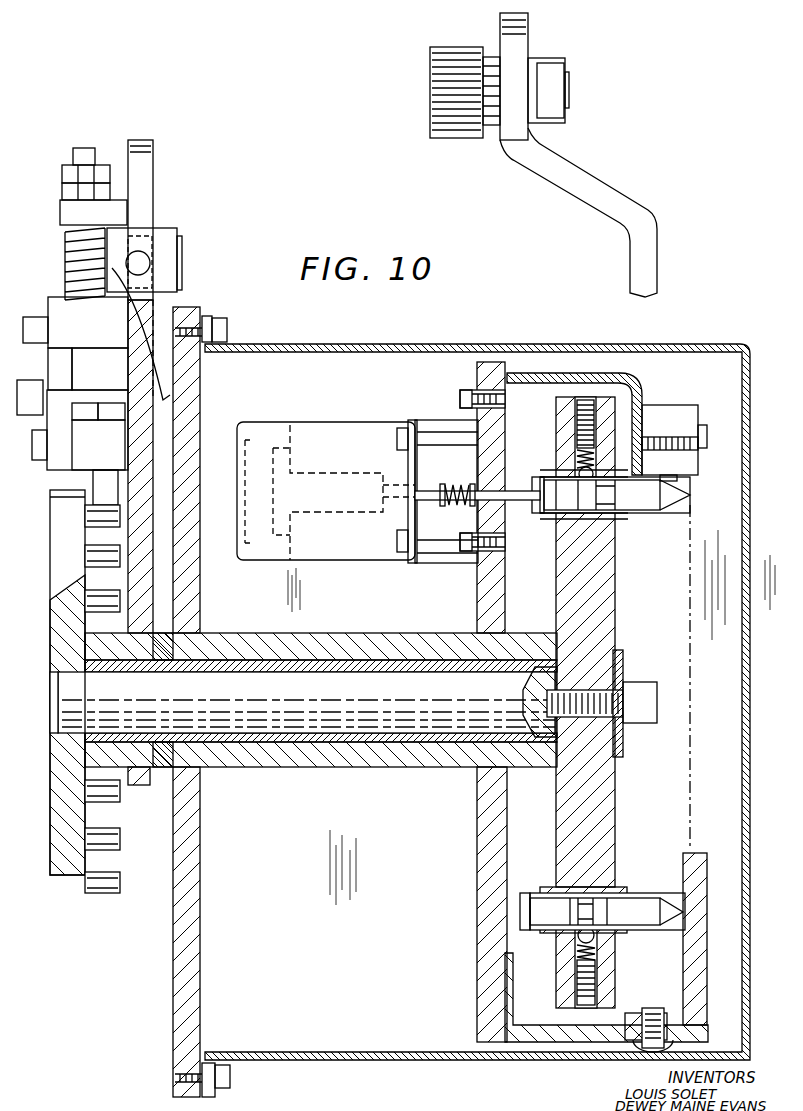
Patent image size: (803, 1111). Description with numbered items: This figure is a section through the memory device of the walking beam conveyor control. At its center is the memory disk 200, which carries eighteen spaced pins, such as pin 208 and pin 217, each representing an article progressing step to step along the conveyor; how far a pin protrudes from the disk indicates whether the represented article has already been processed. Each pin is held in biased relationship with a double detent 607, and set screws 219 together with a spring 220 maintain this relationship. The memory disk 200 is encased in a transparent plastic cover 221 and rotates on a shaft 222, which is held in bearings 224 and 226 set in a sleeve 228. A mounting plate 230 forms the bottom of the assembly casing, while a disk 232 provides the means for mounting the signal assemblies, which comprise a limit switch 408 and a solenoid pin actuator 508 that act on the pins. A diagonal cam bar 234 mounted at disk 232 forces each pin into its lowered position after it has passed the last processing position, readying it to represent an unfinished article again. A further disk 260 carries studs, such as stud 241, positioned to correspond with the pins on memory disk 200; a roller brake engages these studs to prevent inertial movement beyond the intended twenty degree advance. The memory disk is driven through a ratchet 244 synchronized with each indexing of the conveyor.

The memory disk 200 is at (607, 803).
The pin 208 is at (628, 512).
The pin 217 is at (643, 903).
The set screw 219 is at (578, 428).
The spring 220 is at (578, 462).
The transparent plastic cover 221 is at (733, 346).
The shaft 222 is at (327, 732).
The bearing 224 is at (216, 760).
The bearing 226 is at (513, 767).
The sleeve 228 is at (400, 768).
The mounting plate 230 is at (200, 924).
The disk 232 is at (477, 925).
The diagonal cam bar 234 is at (690, 853).
The stud 241 is at (105, 895).
The ratchet 244 is at (78, 478).
The disk 260 is at (57, 822).
The limit switch 408 is at (650, 405).
The solenoid pin actuator 508 is at (370, 565).
The double detent 607 is at (585, 515).